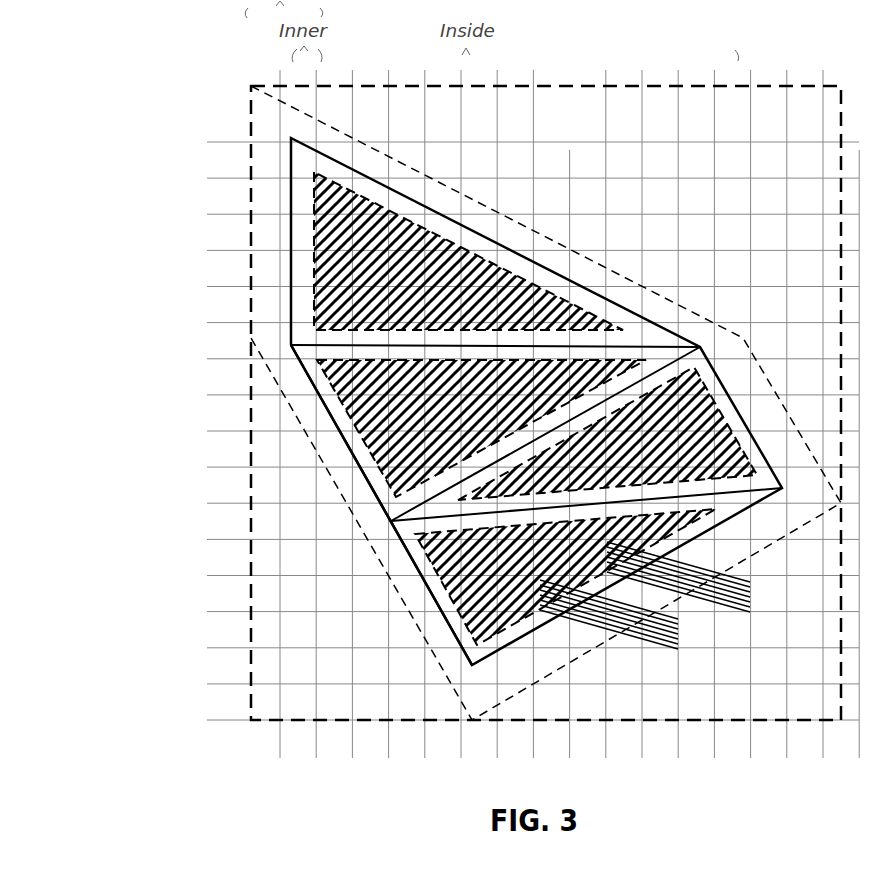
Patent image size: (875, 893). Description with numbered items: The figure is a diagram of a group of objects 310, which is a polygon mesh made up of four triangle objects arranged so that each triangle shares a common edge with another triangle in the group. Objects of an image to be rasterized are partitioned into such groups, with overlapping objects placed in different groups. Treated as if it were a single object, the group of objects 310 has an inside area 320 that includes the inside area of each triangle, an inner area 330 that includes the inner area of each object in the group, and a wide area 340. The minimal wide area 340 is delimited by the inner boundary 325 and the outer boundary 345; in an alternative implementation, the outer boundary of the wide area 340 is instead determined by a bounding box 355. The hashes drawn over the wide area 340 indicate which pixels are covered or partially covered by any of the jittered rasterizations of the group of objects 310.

The group of objects 310 is at (291, 273).
The inside area 320 is at (411, 284).
The inner boundary 325 is at (432, 595).
The inner area 330 is at (440, 524).
The wide area 340 is at (670, 599).
The outer boundary 345 is at (440, 663).
The bounding box 355 is at (250, 670).